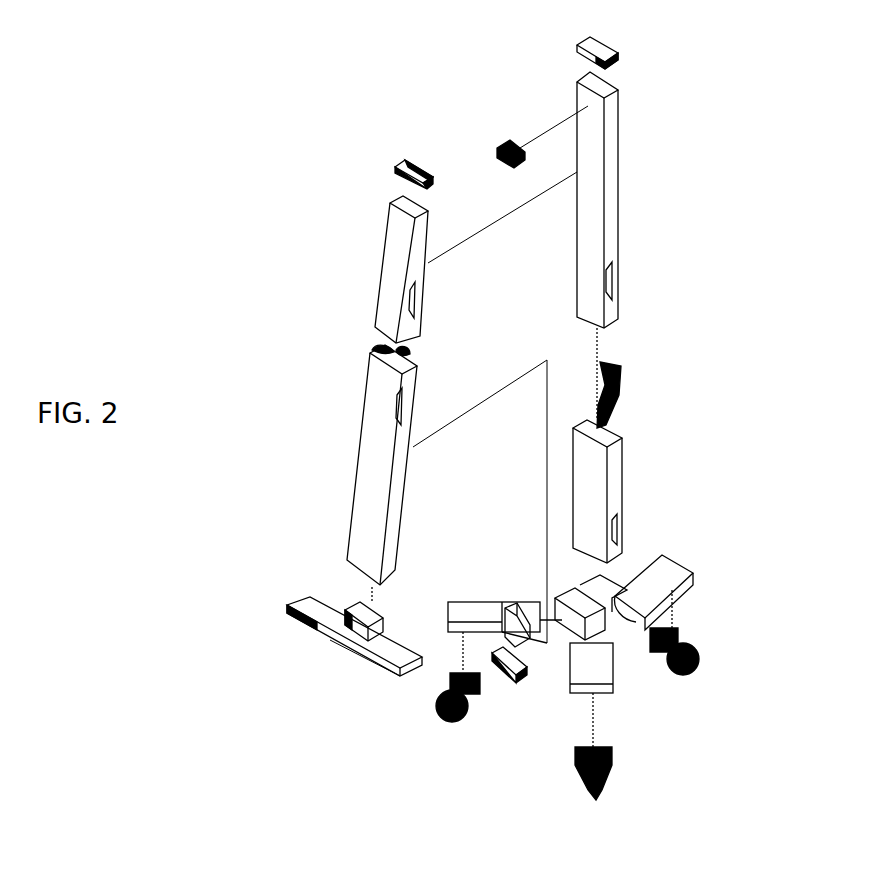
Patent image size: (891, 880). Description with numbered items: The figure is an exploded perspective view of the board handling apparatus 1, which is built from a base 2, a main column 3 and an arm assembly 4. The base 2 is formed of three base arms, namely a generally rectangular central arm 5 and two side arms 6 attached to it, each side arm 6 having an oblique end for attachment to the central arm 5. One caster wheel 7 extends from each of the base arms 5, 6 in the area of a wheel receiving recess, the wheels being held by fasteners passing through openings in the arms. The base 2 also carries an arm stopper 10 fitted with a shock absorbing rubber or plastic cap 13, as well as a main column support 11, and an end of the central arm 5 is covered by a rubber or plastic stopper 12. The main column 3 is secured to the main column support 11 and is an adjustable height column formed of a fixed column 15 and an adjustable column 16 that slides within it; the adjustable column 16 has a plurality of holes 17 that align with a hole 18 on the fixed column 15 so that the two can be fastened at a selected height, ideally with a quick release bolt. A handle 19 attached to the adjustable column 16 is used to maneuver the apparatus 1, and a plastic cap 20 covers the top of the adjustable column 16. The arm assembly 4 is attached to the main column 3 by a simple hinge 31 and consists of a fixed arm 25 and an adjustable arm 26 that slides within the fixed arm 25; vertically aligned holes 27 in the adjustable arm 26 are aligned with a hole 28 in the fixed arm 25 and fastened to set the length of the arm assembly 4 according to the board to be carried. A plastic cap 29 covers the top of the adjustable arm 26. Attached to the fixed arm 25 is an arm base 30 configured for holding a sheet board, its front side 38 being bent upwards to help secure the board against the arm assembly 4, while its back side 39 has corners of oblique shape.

The board handling apparatus 1 is at (770, 109).
The base 2 is at (807, 609).
The main column 3 is at (664, 311).
The arm assembly 4 is at (310, 466).
The central arm 5 is at (667, 562).
The side arm 6 is at (468, 602).
The caster wheel 7 is at (687, 645).
The arm stopper 10 is at (560, 596).
The main column support 11 is at (612, 598).
The stopper 12 is at (507, 680).
The shock absorbing cap 13 is at (513, 606).
The fixed column 15 is at (622, 518).
The adjustable column 16 is at (615, 203).
The holes 17 is at (610, 282).
The hole 18 is at (613, 477).
The handle 19 is at (620, 381).
The plastic cap 20 is at (612, 52).
The fixed arm 25 is at (368, 383).
The adjustable arm 26 is at (385, 228).
The holes 27 is at (413, 306).
The hole 28 is at (405, 403).
The plastic cap 29 is at (406, 158).
The arm base 30 is at (320, 620).
The hinge 31 is at (503, 142).
The front side 38 is at (360, 652).
The back side 39 is at (320, 598).